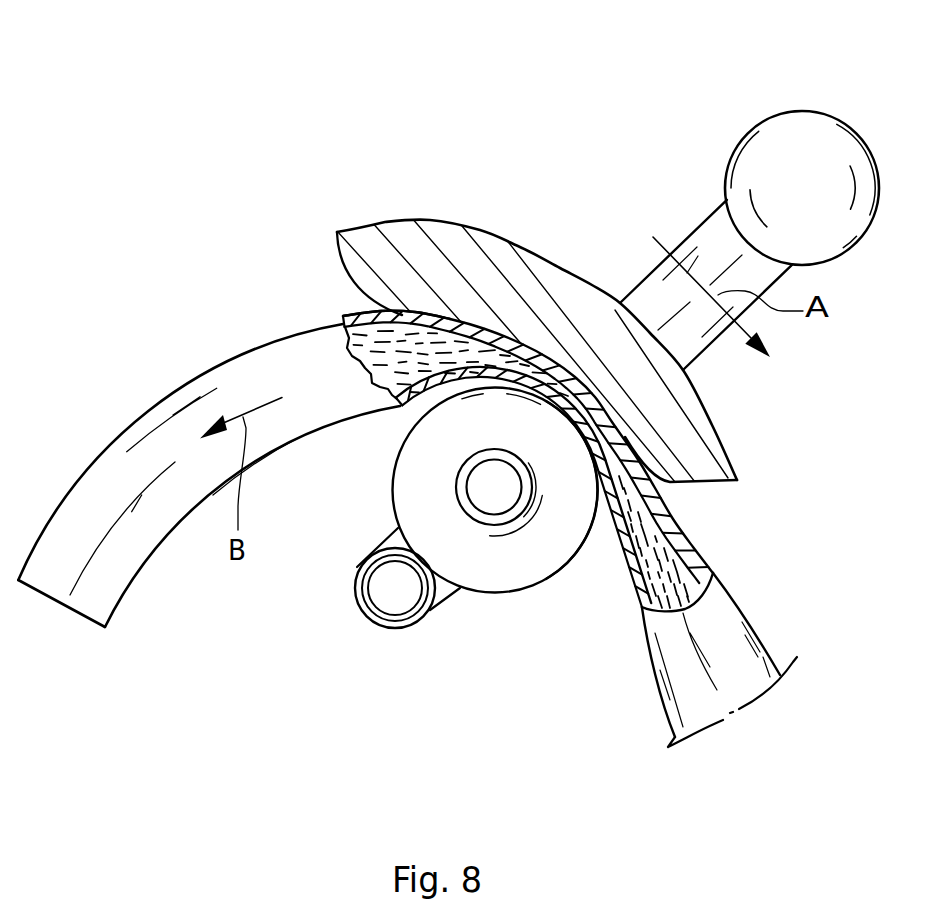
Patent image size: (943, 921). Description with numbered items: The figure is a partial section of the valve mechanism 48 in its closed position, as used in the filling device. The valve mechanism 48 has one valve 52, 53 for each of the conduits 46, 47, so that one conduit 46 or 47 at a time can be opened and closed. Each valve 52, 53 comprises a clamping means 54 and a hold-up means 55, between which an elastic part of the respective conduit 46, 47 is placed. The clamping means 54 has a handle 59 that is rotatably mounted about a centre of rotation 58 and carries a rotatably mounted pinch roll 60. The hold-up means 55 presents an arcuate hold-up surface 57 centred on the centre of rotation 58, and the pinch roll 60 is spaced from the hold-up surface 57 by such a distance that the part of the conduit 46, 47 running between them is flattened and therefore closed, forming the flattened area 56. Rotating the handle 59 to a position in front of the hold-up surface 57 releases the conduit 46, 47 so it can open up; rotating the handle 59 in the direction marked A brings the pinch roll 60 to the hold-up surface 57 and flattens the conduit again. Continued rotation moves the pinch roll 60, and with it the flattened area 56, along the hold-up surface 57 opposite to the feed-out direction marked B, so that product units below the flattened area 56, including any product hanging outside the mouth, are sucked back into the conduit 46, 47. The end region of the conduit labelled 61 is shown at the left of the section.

The conduit 46 is at (209, 490).
The conduit 47 is at (209, 490).
The valve mechanism 48 is at (558, 190).
The valve 52 is at (570, 433).
The valve 53 is at (570, 433).
The clamping means 54 is at (545, 572).
The hold-up means 55 is at (704, 443).
The flattened area 56 is at (542, 357).
The hold-up surface 57 is at (403, 318).
The centre of rotation 58 is at (399, 585).
The handle 59 is at (787, 135).
The pinch roll 60 is at (483, 577).
The arm end 61 is at (63, 606).